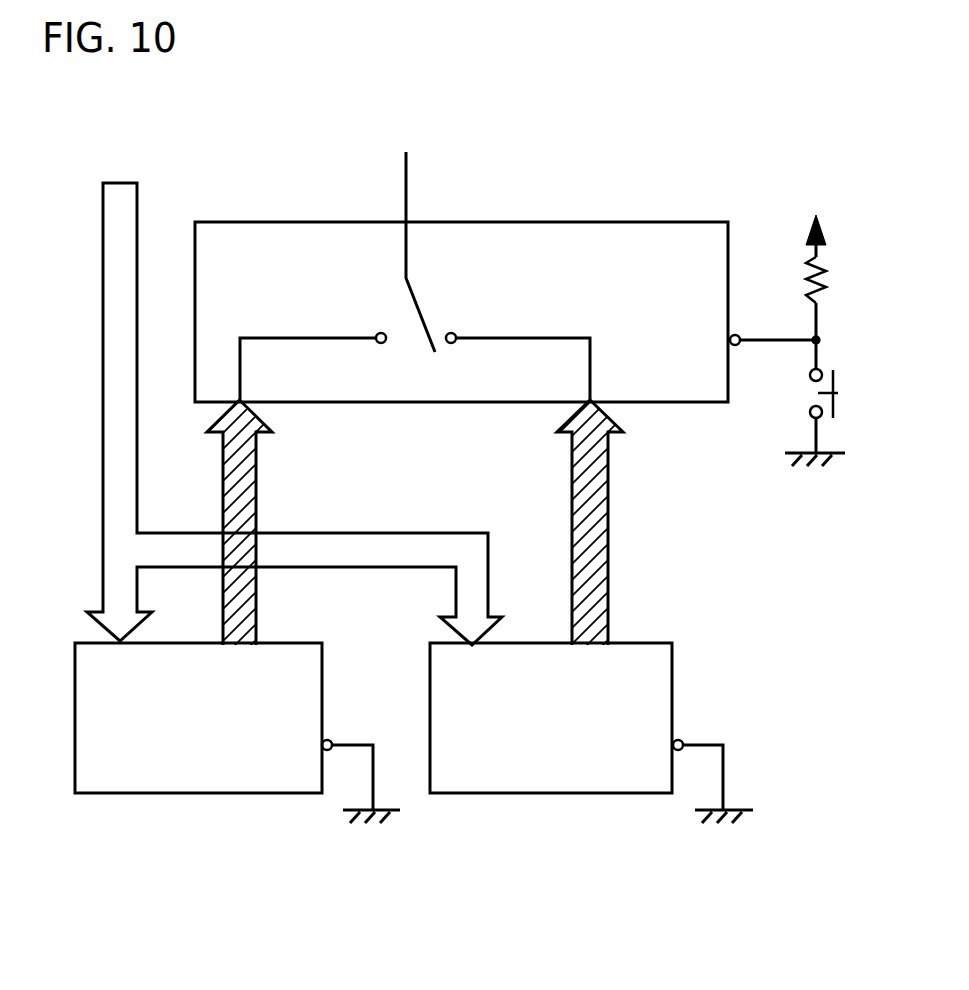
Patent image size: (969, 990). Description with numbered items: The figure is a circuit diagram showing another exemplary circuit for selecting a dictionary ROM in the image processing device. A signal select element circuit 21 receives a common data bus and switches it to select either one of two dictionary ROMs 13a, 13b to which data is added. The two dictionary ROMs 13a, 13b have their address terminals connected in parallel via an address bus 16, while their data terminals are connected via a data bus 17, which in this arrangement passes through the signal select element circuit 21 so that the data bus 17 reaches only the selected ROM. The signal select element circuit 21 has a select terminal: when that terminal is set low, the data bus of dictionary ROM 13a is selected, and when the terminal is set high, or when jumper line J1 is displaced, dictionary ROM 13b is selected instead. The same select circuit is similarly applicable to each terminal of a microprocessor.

The signal select element circuit 21 is at (525, 222).
The address bus 16 is at (157, 533).
The data bus 17 is at (257, 480).
The dictionary ROM 13a is at (195, 793).
The dictionary ROM 13b is at (543, 793).
The jumper line J1 is at (836, 393).